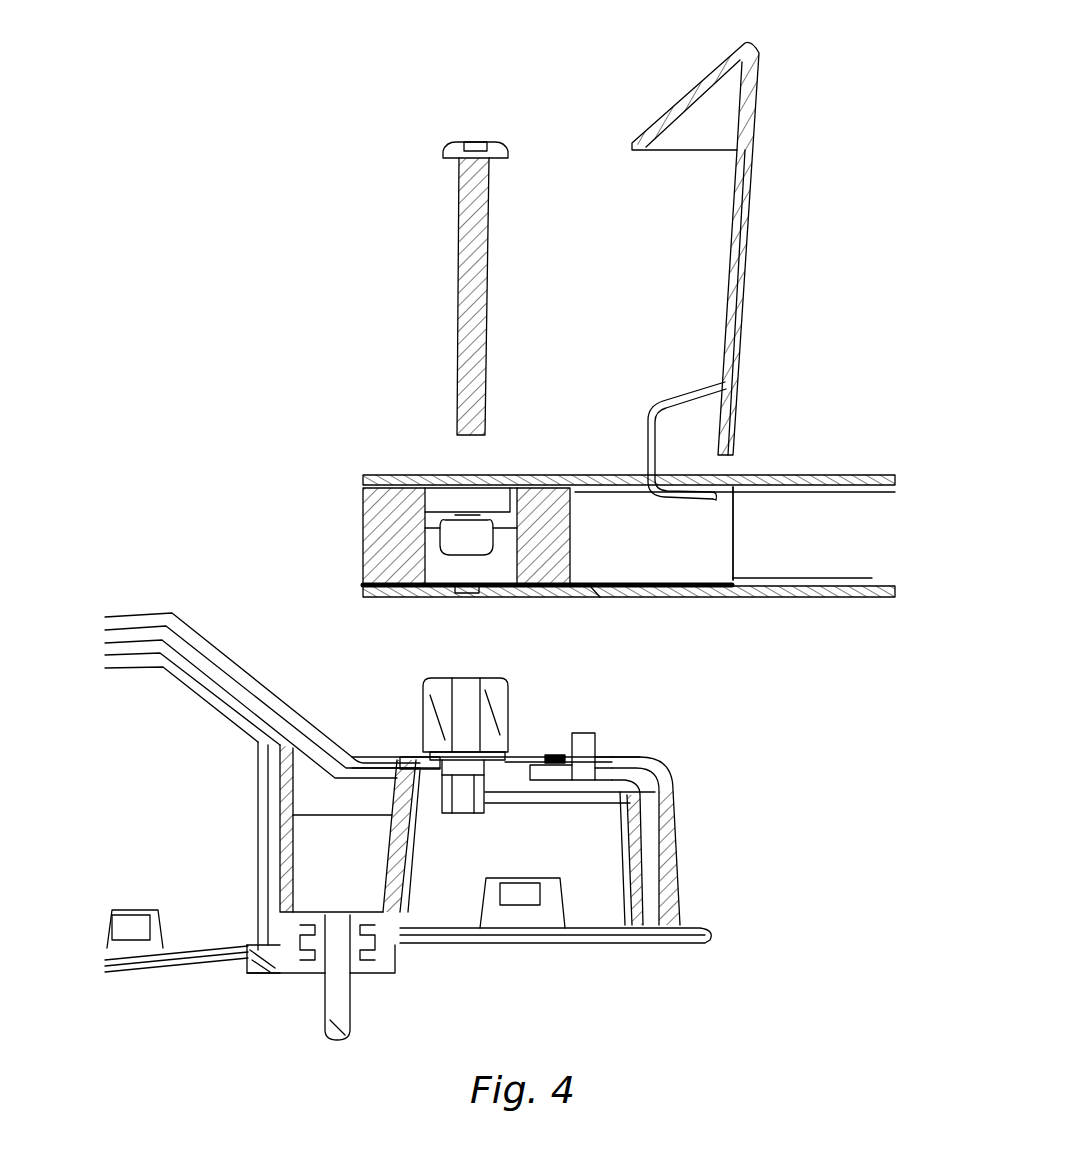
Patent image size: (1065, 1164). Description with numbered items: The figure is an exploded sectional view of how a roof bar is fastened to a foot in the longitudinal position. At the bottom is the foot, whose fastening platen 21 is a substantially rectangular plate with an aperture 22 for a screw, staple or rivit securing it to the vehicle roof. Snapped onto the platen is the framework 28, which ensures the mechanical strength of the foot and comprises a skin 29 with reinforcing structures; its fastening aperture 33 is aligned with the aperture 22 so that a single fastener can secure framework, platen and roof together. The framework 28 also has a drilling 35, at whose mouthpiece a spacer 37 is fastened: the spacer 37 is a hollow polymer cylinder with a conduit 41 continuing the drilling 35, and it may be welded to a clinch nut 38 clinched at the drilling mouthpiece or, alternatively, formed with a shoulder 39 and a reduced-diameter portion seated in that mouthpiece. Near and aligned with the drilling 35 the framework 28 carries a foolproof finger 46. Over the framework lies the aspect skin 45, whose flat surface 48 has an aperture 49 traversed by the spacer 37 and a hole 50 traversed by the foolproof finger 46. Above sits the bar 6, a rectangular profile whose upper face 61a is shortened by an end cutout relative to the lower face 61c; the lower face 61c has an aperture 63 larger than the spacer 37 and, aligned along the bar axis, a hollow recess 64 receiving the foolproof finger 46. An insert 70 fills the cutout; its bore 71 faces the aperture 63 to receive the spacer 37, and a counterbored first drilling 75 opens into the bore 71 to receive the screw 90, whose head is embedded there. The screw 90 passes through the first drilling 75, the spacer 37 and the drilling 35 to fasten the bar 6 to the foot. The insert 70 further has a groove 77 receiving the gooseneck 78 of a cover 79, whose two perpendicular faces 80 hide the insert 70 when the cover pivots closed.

The bar 6 is at (862, 543).
The fastening platen 21 is at (625, 935).
The aperture 22 is at (385, 975).
The framework 28 is at (118, 682).
The skin 29 is at (650, 847).
The fastening aperture 33 is at (265, 955).
The drilling 35 is at (435, 790).
The spacer 37 is at (425, 700).
The clinch nut 38 is at (500, 790).
The shoulder 39 is at (500, 745).
The conduit 41 is at (465, 695).
The aspect skin 45 is at (680, 770).
The foolproof finger 46 is at (598, 733).
The flat surface 48 is at (352, 746).
The aperture 49 is at (400, 755).
The hole 50 is at (605, 752).
The upper face 61a is at (845, 475).
The lower face 61c is at (840, 600).
The aperture 63 is at (510, 597).
The hollow recess 64 is at (610, 597).
The insert 70 is at (353, 522).
The bore 71 is at (437, 570).
The first drilling 75 is at (475, 515).
The groove 77 is at (700, 550).
The gooseneck 78 is at (648, 438).
The cover 79 is at (760, 171).
The perpendicular faces 80 is at (752, 222).
The screw 90 is at (489, 253).